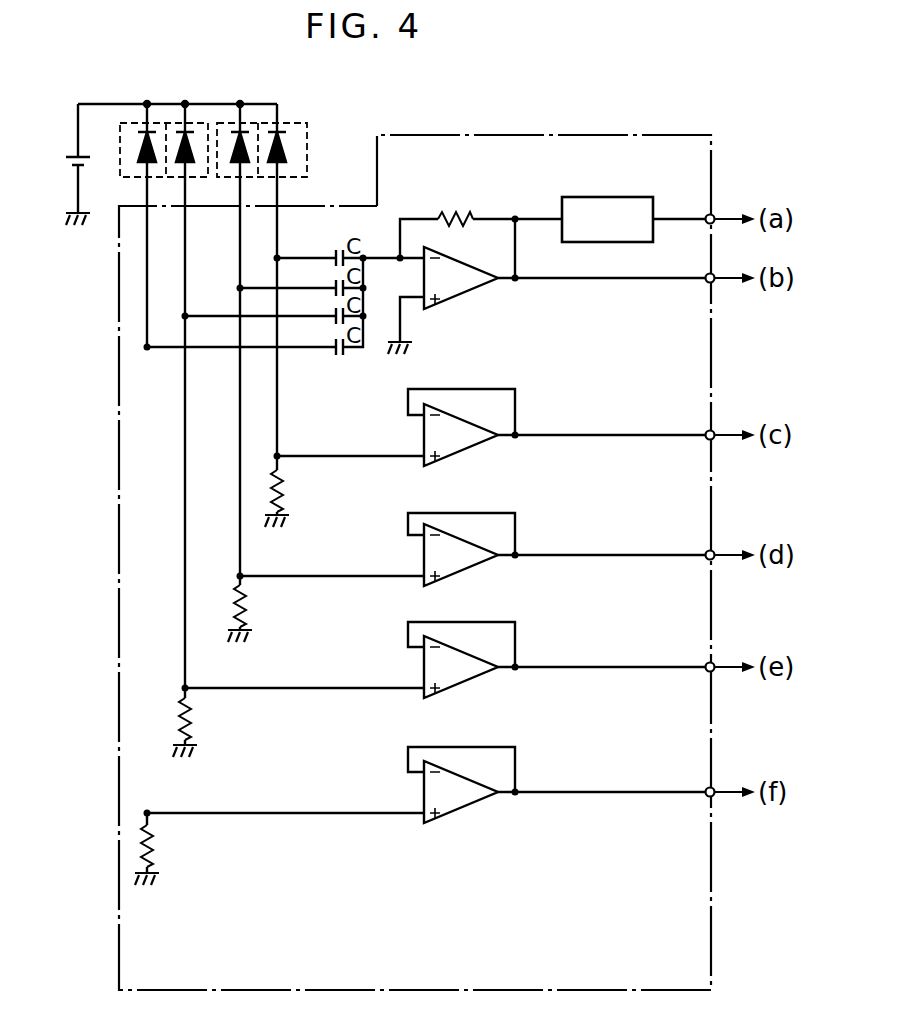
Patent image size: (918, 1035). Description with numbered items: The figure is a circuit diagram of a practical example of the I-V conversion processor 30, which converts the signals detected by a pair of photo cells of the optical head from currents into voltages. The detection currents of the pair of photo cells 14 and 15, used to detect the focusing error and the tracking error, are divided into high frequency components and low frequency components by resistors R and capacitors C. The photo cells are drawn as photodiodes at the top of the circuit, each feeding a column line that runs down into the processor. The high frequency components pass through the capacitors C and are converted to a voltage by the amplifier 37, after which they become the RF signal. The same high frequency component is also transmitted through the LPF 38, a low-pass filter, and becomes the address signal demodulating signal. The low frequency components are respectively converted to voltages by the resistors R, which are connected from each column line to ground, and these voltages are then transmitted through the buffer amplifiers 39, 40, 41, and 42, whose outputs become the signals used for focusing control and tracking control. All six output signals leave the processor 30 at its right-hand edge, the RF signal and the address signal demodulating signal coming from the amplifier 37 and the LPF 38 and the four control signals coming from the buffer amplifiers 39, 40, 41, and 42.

The photo cell 14 is at (307, 148).
The photo cell 15 is at (120, 145).
The I-V conversion processor 30 is at (658, 136).
The amplifier 37 is at (480, 290).
The LPF (low-pass filter) 38 is at (625, 197).
The buffer amplifier 39 is at (485, 446).
The buffer amplifier 40 is at (483, 565).
The buffer amplifier 41 is at (483, 680).
The buffer amplifier 42 is at (485, 805).